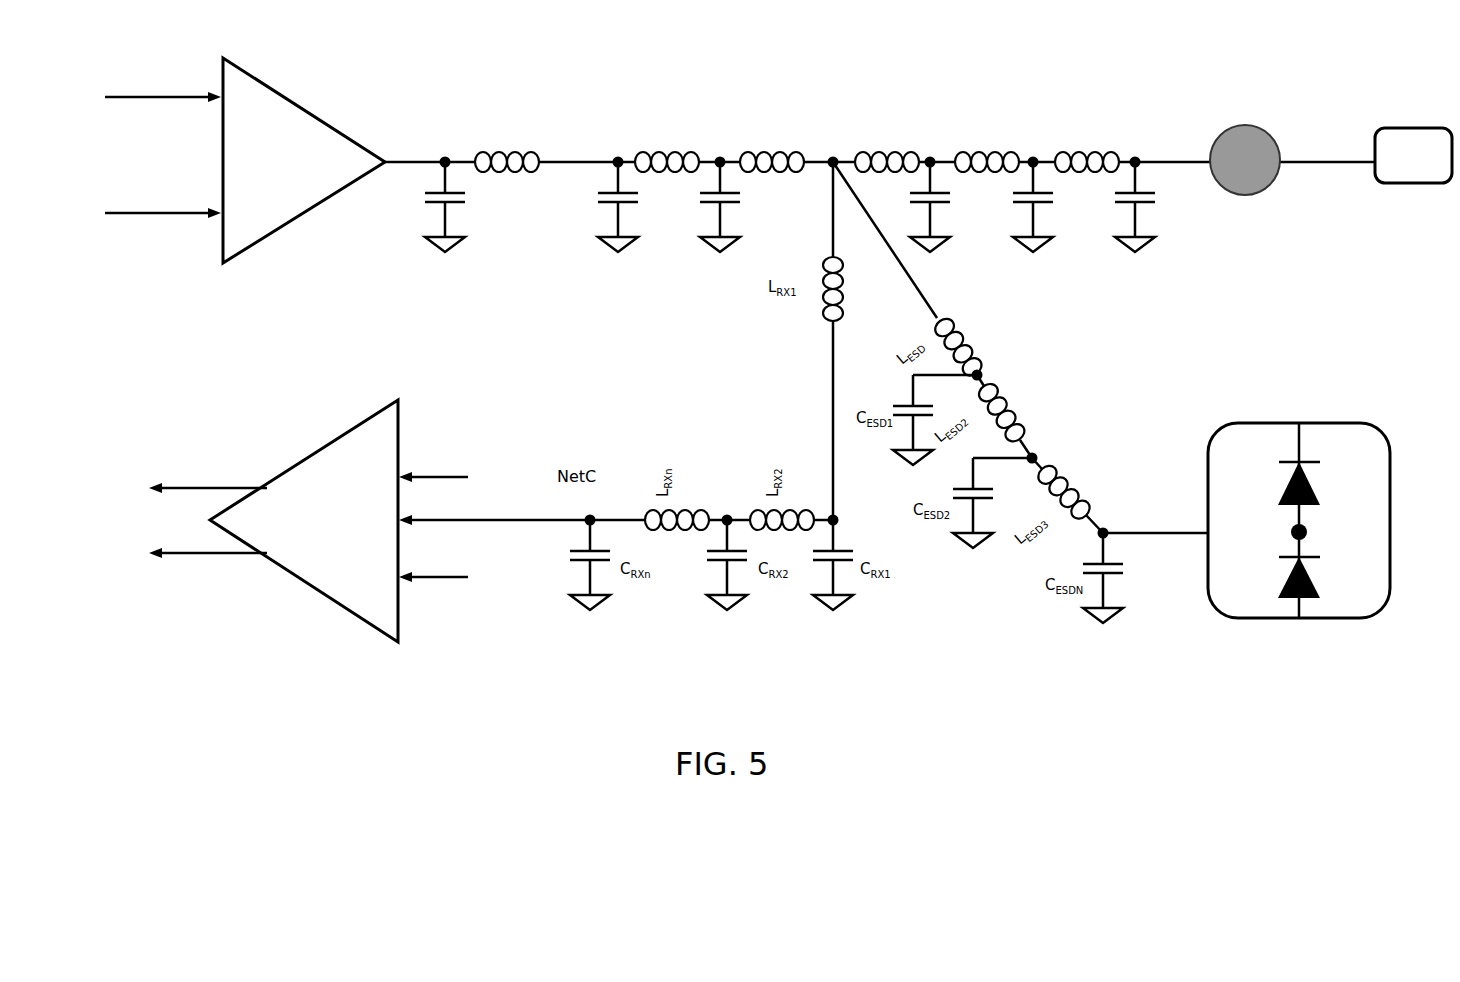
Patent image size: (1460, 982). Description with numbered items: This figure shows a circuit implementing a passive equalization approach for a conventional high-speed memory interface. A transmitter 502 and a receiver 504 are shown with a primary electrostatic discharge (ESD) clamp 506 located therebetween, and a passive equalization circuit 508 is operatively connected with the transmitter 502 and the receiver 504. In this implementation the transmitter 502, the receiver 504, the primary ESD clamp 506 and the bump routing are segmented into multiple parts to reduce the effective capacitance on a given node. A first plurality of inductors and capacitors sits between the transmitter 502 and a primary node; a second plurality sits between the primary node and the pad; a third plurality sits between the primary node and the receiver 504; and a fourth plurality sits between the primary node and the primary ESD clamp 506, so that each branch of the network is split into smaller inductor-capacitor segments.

The transmitter 502 is at (300, 210).
The receiver 504 is at (310, 585).
The primary electrostatic discharge (ESD) clamp 506 is at (1312, 612).
The passive equalization circuit 508 is at (650, 87).